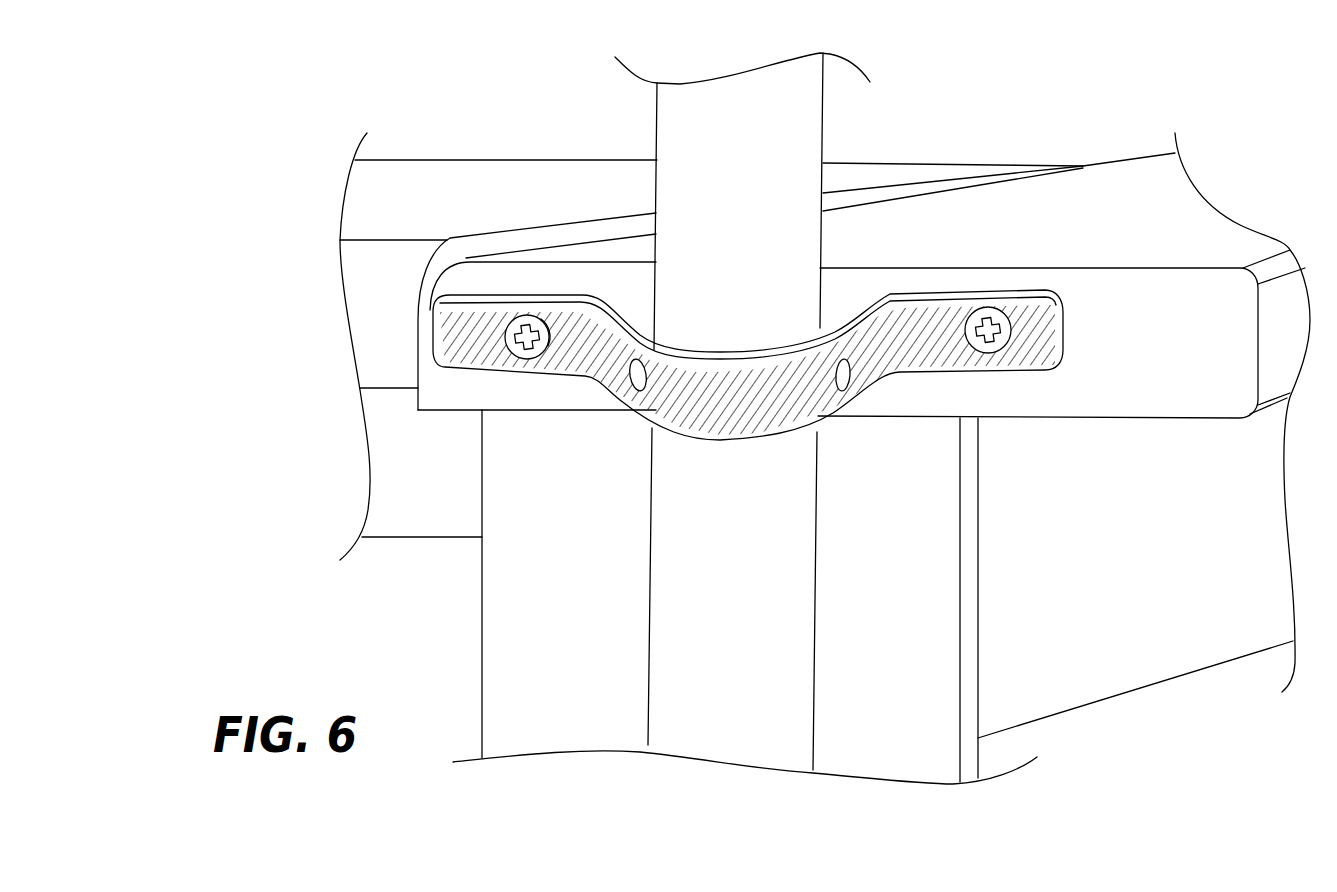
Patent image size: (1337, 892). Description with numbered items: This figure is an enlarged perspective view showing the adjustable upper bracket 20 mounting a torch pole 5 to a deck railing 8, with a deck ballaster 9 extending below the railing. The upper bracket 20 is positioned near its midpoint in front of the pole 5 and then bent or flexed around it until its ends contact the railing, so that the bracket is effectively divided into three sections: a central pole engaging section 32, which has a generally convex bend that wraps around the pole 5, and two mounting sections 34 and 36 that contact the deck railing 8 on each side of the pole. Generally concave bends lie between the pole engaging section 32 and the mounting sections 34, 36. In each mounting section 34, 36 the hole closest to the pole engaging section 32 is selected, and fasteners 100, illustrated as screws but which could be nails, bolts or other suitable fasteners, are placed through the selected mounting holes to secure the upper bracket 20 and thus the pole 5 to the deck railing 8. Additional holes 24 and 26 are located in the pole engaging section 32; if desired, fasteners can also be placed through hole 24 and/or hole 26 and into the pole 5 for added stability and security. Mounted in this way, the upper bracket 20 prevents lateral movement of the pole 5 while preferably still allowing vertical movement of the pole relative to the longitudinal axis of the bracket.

The torch pole 5 is at (712, 720).
The deck railing 8 is at (1170, 392).
The deck ballaster 9 is at (937, 648).
The upper bracket 20 is at (740, 388).
The hole 24 is at (843, 393).
The hole 26 is at (607, 398).
The pole engaging section 32 is at (727, 432).
The mounting section 34 is at (947, 282).
The mounting section 36 is at (514, 286).
The fasteners 100 is at (503, 340).